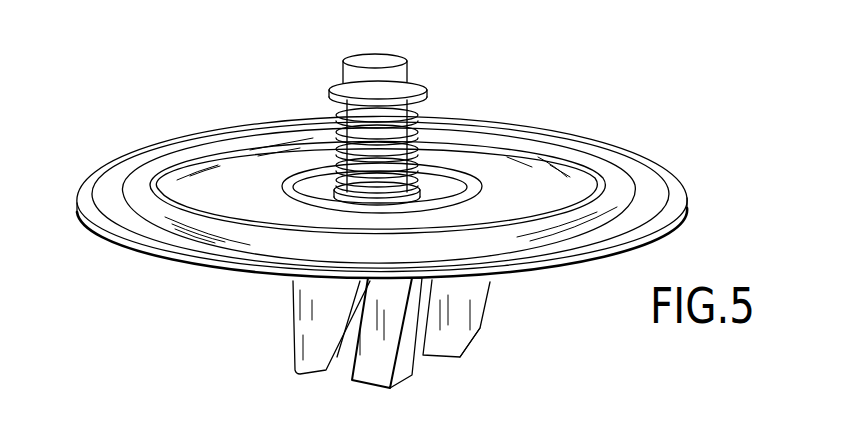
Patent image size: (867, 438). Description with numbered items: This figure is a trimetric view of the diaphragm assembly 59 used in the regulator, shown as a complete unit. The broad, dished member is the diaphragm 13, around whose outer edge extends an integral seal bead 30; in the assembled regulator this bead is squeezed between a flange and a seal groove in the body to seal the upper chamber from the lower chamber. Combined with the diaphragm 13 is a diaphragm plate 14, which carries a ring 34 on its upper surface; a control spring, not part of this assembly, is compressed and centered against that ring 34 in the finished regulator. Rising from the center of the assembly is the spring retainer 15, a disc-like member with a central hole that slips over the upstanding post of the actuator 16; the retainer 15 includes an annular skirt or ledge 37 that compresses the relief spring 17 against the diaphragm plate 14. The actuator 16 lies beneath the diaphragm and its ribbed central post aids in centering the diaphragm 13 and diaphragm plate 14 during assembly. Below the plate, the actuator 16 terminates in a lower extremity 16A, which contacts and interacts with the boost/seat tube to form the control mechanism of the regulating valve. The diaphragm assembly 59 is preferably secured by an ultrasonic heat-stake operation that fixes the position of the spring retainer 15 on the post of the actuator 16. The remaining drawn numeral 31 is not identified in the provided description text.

The diaphragm assembly 59 is at (270, 107).
The diaphragm 13 is at (120, 183).
The diaphragm plate 14 is at (207, 190).
The spring retainer 15 is at (410, 87).
The actuator 16 is at (379, 333).
The lower extremity 16A is at (460, 330).
The relief spring 17 is at (320, 155).
The seal bead 30 is at (672, 186).
The curved wall 31 is at (143, 197).
The ring 34 is at (470, 187).
The annular skirt or ledge 37 is at (420, 98).